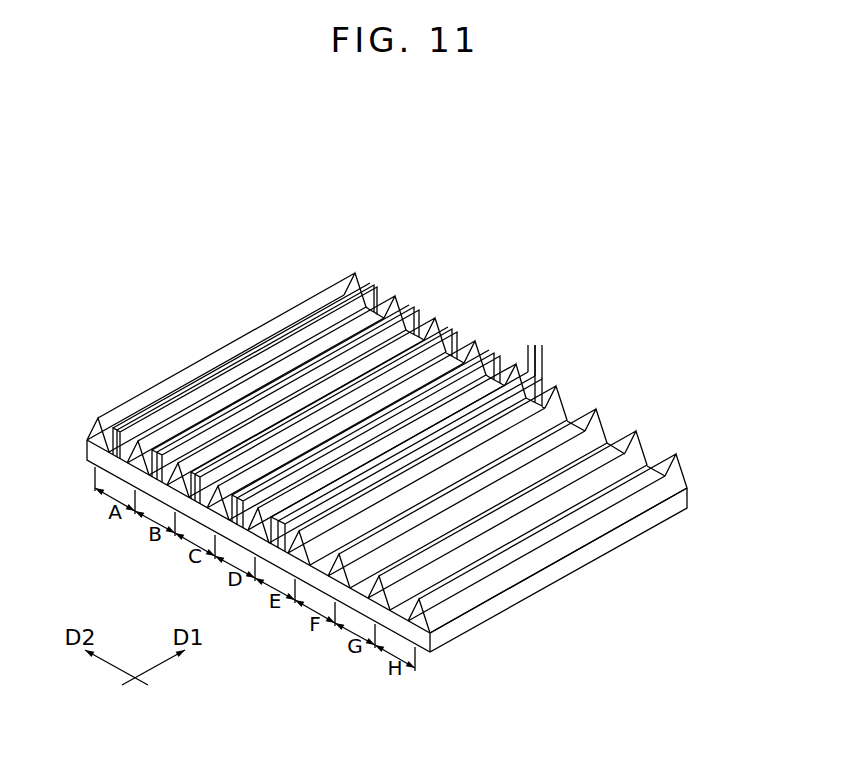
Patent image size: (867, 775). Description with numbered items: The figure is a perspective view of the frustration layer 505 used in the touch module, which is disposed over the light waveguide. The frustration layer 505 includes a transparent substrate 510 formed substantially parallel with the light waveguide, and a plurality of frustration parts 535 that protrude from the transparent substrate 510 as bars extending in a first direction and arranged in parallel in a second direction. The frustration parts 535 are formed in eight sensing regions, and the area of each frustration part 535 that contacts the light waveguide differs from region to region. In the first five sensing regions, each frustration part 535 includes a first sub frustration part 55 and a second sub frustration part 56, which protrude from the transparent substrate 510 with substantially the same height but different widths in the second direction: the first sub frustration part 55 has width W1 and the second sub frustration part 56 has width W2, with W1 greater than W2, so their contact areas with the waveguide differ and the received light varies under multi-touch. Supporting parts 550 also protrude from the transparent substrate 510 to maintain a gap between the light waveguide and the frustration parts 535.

The frustration layer 505 is at (247, 268).
The transparent substrate 510 is at (682, 497).
The supporting parts 550 is at (677, 473).
The frustration parts 535 is at (281, 332).
The first sub frustration part 55 is at (369, 281).
The second sub frustration part 56 is at (381, 286).
The width of first sub frustration part W1 is at (530, 349).
The width of second sub frustration part W2 is at (542, 352).